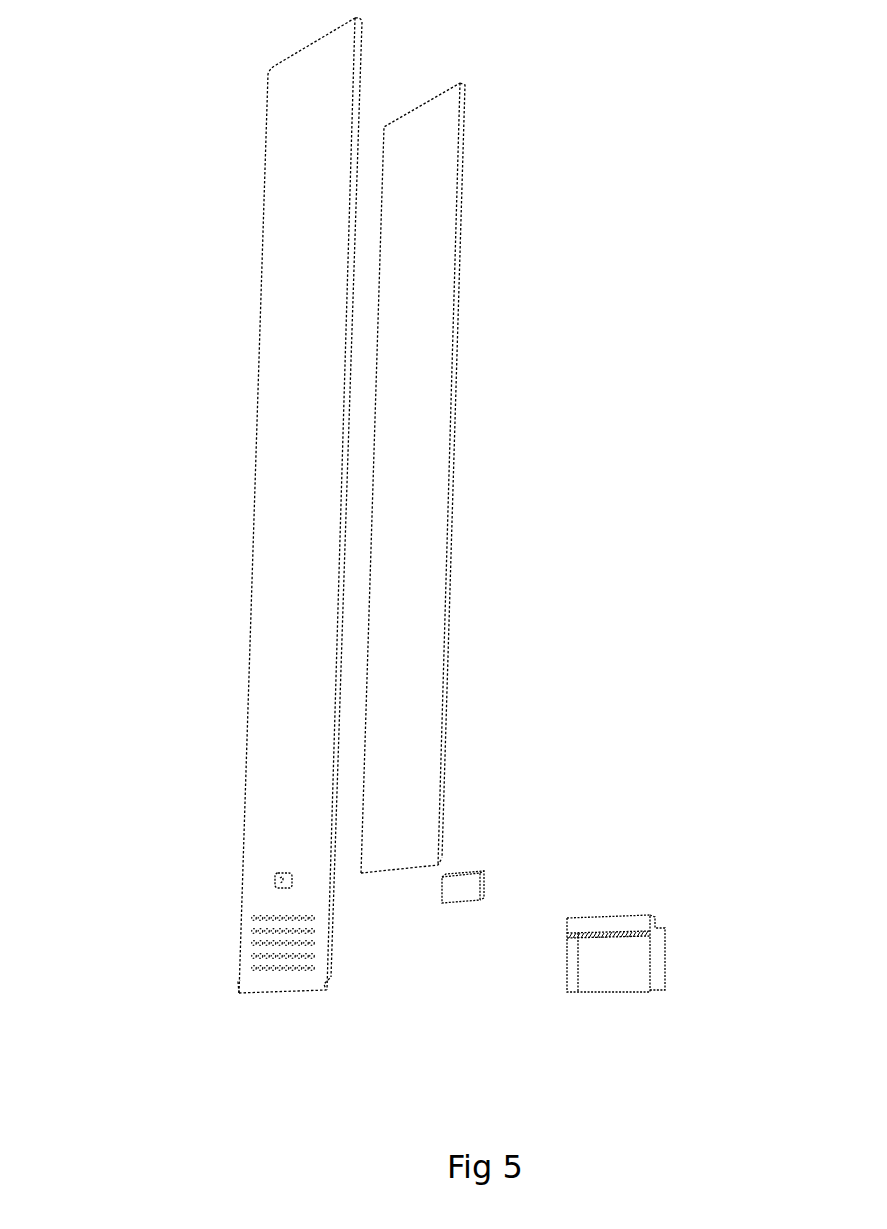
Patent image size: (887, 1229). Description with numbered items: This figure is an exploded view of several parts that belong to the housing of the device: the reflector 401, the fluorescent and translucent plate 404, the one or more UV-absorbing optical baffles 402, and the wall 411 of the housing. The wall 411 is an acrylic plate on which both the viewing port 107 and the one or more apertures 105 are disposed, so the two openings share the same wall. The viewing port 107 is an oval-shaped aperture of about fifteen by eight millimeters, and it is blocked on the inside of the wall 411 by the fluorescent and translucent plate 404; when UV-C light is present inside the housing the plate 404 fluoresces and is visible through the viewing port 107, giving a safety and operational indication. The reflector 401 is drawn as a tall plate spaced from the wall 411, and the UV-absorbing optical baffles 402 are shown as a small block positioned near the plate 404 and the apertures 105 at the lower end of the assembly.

The acrylic wall 411 is at (268, 297).
The reflector 401 is at (450, 303).
The viewing port 107 is at (280, 875).
The apertures 105 is at (248, 965).
The fluorescent and translucent plate 404 is at (458, 875).
The UV-absorbing optical baffles 402 is at (662, 955).